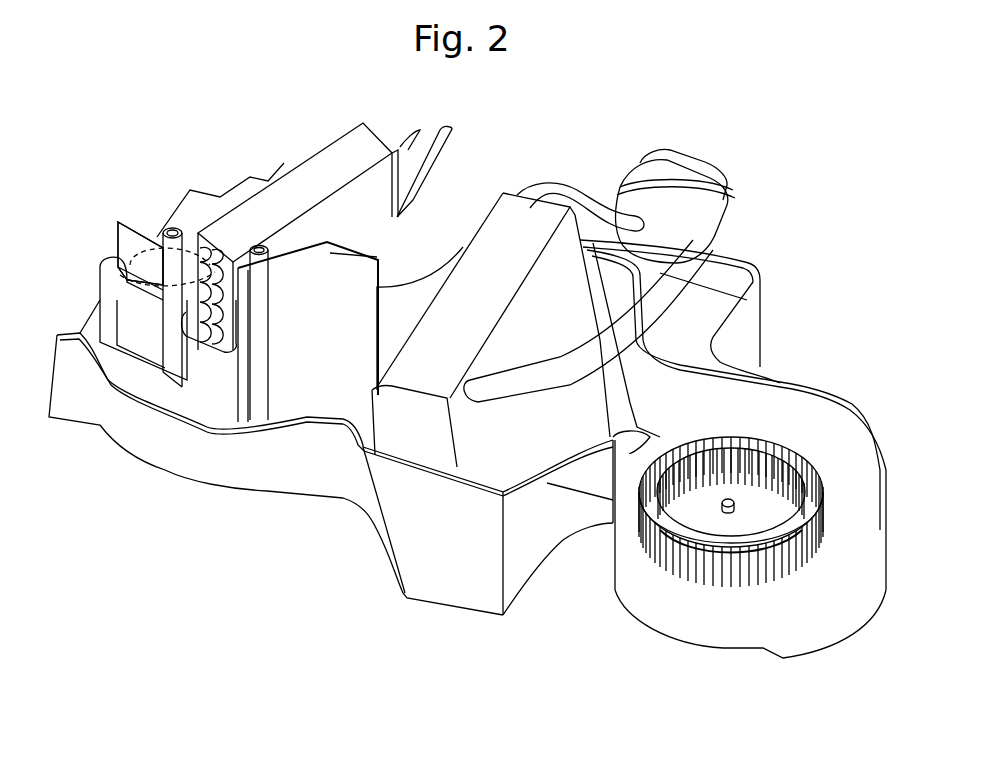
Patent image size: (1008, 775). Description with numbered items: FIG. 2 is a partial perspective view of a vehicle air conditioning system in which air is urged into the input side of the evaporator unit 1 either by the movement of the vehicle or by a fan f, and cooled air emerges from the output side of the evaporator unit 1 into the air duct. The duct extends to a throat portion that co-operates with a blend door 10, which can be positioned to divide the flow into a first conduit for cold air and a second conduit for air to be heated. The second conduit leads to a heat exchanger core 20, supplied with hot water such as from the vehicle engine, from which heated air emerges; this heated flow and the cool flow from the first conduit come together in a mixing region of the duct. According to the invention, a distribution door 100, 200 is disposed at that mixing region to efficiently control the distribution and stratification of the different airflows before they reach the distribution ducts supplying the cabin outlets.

The evaporator unit 1 is at (503, 203).
The blend door 10 is at (332, 331).
The heat exchanger core 20 is at (322, 165).
The distribution door 100 is at (123, 243).
The distribution door 200 is at (140, 253).
The fan f is at (806, 408).